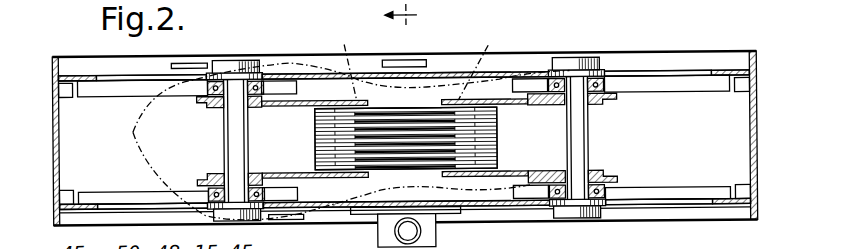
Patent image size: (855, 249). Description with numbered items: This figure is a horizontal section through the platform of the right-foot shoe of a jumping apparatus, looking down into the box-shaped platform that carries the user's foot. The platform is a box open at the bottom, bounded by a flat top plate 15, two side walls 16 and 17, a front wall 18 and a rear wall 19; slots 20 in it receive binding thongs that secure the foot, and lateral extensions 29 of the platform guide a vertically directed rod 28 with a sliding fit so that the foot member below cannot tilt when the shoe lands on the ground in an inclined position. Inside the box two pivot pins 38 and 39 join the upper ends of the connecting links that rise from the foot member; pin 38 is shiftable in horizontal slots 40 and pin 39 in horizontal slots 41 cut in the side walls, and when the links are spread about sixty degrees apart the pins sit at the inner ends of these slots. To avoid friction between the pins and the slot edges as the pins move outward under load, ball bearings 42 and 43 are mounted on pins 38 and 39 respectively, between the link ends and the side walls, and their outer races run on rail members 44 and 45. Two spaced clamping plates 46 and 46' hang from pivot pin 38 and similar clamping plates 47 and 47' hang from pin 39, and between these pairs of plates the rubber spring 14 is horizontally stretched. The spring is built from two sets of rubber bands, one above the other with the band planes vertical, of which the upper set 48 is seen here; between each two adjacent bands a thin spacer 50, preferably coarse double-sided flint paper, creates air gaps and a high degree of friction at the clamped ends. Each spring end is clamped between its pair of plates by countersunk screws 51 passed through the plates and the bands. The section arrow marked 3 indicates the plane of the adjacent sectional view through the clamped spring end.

The section line 3— 3 is at (409, 15).
The rubber spring 14 is at (424, 100).
The top plate 15 is at (664, 62).
The side wall 16 is at (733, 210).
The side wall 17 is at (722, 71).
The front wall 18 is at (50, 121).
The rear wall 19 is at (758, 122).
The slots 20 is at (193, 61).
The rod 28 is at (395, 230).
The lateral extensions 29 is at (429, 233).
The pivot pin 38 is at (574, 79).
The pivot pin 39 is at (233, 82).
The horizontal slots 40 is at (647, 74).
The horizontal slots 41 is at (123, 75).
The ball bearings 42 is at (606, 80).
The ball bearings 43 is at (258, 80).
The rail member 44 is at (703, 87).
The rail member 45 is at (88, 82).
The clamping plate 46 is at (528, 105).
The clamping plate 46' is at (529, 170).
The clamping plate 47 is at (281, 92).
The clamping plate 47' is at (282, 187).
The set of rubber bands 48 is at (379, 108).
The spacer 50 is at (315, 148).
The countersunk screws 51 is at (416, 62).